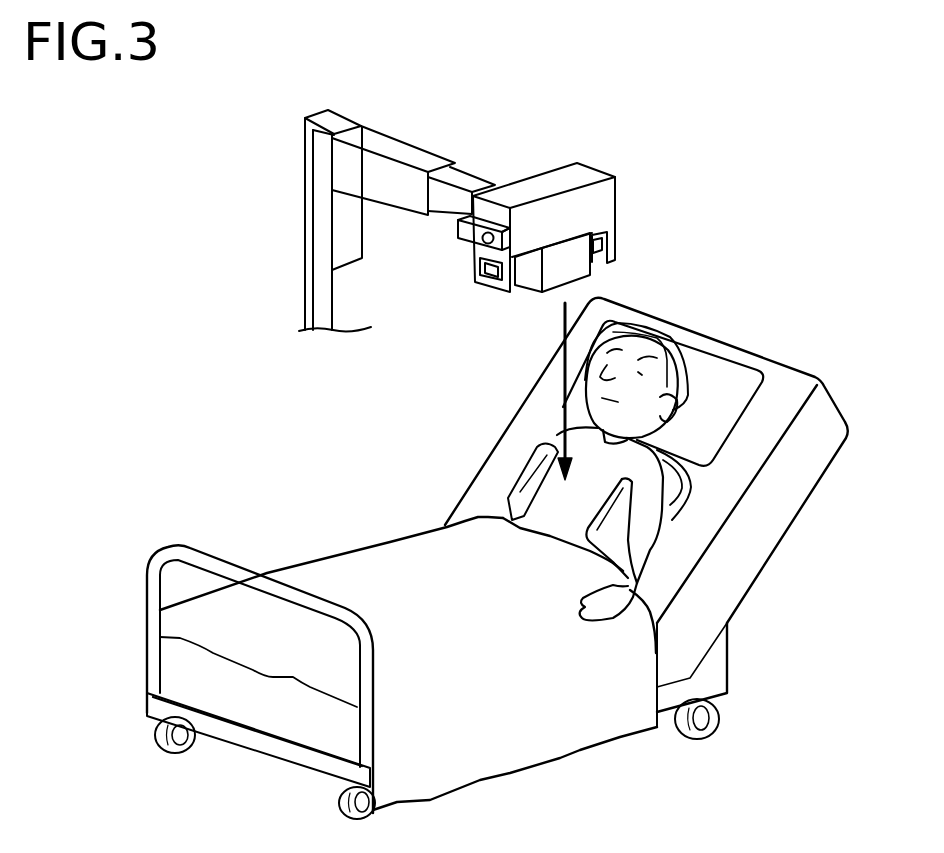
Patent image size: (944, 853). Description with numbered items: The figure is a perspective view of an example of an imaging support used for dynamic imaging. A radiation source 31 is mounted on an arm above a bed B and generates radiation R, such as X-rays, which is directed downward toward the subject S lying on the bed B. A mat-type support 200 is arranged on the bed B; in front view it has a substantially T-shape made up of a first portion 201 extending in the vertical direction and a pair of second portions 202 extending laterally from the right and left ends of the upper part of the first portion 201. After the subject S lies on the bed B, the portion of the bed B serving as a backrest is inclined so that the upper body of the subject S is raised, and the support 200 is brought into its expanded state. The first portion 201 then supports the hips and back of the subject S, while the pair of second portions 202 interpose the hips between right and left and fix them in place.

The radiation source 31 is at (585, 173).
The radiation R is at (564, 320).
The subject S is at (658, 330).
The bed B is at (802, 372).
The imaging support 200 is at (693, 487).
The first portion 201 is at (670, 487).
The second portions 202 is at (527, 467).